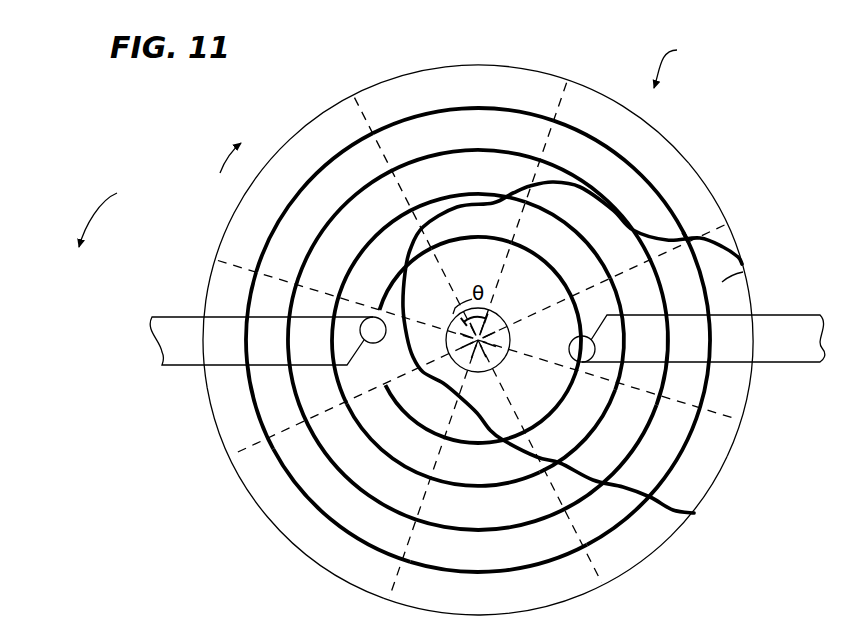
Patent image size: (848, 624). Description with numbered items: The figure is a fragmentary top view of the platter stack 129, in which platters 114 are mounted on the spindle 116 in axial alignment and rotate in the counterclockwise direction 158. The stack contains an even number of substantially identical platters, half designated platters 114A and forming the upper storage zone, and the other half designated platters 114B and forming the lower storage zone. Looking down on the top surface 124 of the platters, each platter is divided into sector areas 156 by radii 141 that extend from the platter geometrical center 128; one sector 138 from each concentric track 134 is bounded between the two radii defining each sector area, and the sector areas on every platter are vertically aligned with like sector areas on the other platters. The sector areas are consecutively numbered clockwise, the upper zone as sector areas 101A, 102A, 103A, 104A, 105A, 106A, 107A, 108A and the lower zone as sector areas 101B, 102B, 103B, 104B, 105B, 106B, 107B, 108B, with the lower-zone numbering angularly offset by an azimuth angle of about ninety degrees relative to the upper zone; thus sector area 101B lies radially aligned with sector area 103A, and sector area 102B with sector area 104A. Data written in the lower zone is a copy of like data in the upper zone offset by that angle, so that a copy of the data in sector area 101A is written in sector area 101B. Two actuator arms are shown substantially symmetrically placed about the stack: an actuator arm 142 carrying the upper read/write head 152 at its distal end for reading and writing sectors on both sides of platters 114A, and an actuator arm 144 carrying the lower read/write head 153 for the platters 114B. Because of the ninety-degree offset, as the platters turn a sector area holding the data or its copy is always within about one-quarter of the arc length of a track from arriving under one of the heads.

The sector area 101A is at (445, 297).
The sector area 102A is at (490, 265).
The sector area 103A is at (573, 249).
The sector area 104A is at (657, 292).
The sector area 105A is at (576, 447).
The sector area 106A is at (484, 396).
The sector area 107A is at (426, 372).
The sector area 108A is at (379, 378).
The sector area 101B is at (611, 123).
The sector area 102B is at (734, 247).
The sector area 103B is at (668, 539).
The sector area 104B is at (494, 566).
The sector area 105B is at (399, 540).
The sector area 106B is at (248, 403).
The sector area 107B is at (245, 212).
The sector area 108B is at (439, 137).
The platter 114 is at (493, 62).
The platter 114A is at (755, 267).
The platter 114B is at (267, 497).
The spindle 116 is at (502, 358).
The platter surface 124 is at (237, 237).
The platter geometrical center 128 is at (480, 337).
The stack 129 is at (683, 66).
The track 134 is at (267, 427).
The sector 138 is at (597, 253).
The radii 141 is at (558, 93).
The actuator arm 142 is at (728, 349).
The actuator arm 144 is at (228, 354).
The read/write head 152 is at (569, 343).
The read/write head 153 is at (359, 326).
The sector area 156 is at (328, 127).
The counterclockwise direction 158 is at (90, 206).